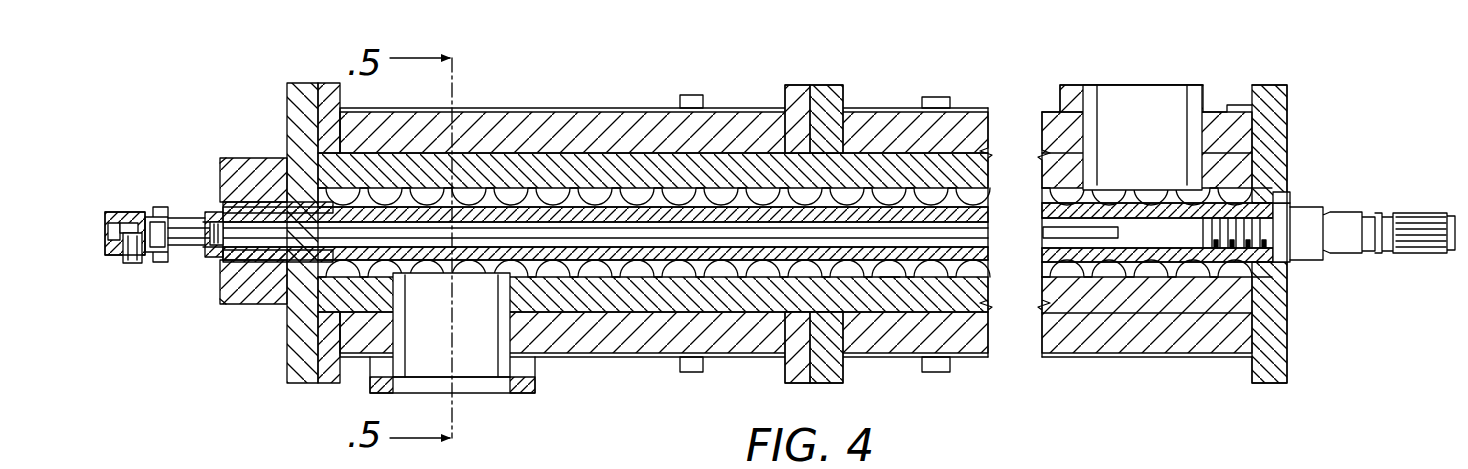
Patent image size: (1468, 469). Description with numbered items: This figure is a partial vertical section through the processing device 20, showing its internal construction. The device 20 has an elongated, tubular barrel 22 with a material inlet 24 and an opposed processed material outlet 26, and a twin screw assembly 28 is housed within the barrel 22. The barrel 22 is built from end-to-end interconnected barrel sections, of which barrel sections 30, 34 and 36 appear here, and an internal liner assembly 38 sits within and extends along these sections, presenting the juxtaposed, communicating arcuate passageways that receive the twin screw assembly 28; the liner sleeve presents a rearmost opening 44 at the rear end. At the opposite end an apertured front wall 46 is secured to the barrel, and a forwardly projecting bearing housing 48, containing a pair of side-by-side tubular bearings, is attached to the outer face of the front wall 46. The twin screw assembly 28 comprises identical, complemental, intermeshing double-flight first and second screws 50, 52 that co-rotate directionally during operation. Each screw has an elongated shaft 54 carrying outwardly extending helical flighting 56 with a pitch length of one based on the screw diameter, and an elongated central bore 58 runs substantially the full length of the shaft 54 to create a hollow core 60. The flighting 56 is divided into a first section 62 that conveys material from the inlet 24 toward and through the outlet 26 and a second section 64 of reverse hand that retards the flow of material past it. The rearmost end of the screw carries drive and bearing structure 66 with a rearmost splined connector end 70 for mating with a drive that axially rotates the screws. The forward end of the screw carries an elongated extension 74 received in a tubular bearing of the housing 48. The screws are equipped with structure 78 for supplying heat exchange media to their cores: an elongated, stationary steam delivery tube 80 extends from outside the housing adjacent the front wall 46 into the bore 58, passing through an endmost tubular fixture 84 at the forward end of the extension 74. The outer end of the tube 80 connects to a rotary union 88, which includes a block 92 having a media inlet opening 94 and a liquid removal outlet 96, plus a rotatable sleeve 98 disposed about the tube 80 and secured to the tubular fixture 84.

The processing device 20 is at (1328, 102).
The barrel 22 is at (550, 104).
The material inlet 24 is at (1165, 97).
The processed material outlet 26 is at (470, 394).
The twin screw assembly 28 is at (995, 195).
The barrel section 30 is at (1200, 340).
The barrel section 34 is at (880, 122).
The barrel section 36 is at (588, 125).
The internal liner assembly 38 is at (1268, 297).
The rearmost opening 44 is at (1281, 197).
The front wall 46 is at (290, 362).
The bearing housing 48 is at (257, 306).
The first screw 50 is at (1040, 272).
The second screw 52 is at (1118, 186).
The shaft 54 is at (822, 196).
The helical flighting 56 is at (410, 205).
The central bore 58 is at (553, 220).
The hollow core 60 is at (1154, 233).
The first section 62 is at (905, 272).
The second section 64 is at (373, 188).
The drive and bearing structure 66 is at (1283, 240).
The splined connector end 70 is at (1390, 246).
The extension 74 is at (268, 205).
The heat exchange media supply structure 78 is at (150, 200).
The steam delivery tube 80 is at (497, 236).
The tubular fixture 84 is at (206, 228).
The rotary union 88 is at (118, 268).
The block 92 is at (112, 212).
The media inlet opening 94 is at (108, 230).
The liquid removal outlet 96 is at (133, 264).
The rotatable sleeve 98 is at (190, 246).